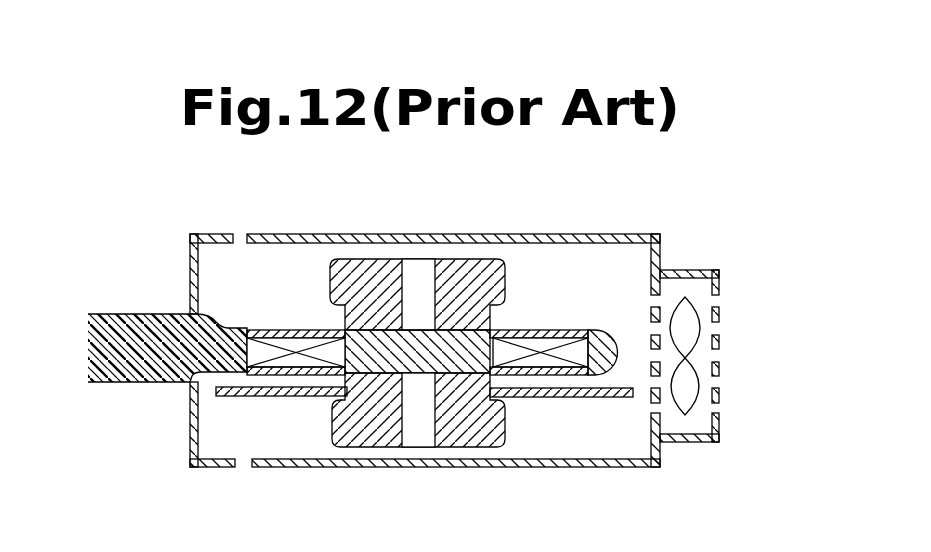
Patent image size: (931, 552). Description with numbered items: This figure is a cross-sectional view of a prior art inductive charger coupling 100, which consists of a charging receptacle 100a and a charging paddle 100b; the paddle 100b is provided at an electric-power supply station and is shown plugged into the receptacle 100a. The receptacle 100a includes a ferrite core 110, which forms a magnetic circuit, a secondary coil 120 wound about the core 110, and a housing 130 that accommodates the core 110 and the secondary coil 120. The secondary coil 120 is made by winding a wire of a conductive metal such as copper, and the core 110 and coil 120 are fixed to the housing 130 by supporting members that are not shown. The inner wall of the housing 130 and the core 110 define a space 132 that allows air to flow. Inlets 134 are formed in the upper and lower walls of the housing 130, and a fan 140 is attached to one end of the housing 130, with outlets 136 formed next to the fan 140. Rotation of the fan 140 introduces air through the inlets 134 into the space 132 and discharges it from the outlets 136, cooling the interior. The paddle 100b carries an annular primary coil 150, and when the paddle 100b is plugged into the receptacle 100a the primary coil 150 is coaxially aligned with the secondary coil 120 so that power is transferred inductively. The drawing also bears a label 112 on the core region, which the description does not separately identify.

The inductive charger coupling 100 is at (643, 217).
The charging receptacle 100a is at (212, 232).
The charging paddle 100b is at (131, 312).
The ferrite core 110 is at (482, 253).
The rotor yoke 112 is at (372, 421).
The secondary coil 120 is at (275, 398).
The housing 130 is at (267, 469).
The space 132 is at (398, 248).
The inlets 134 is at (242, 467).
The outlets 136 is at (718, 412).
The fan 140 is at (690, 415).
The primary coil 150 is at (560, 346).